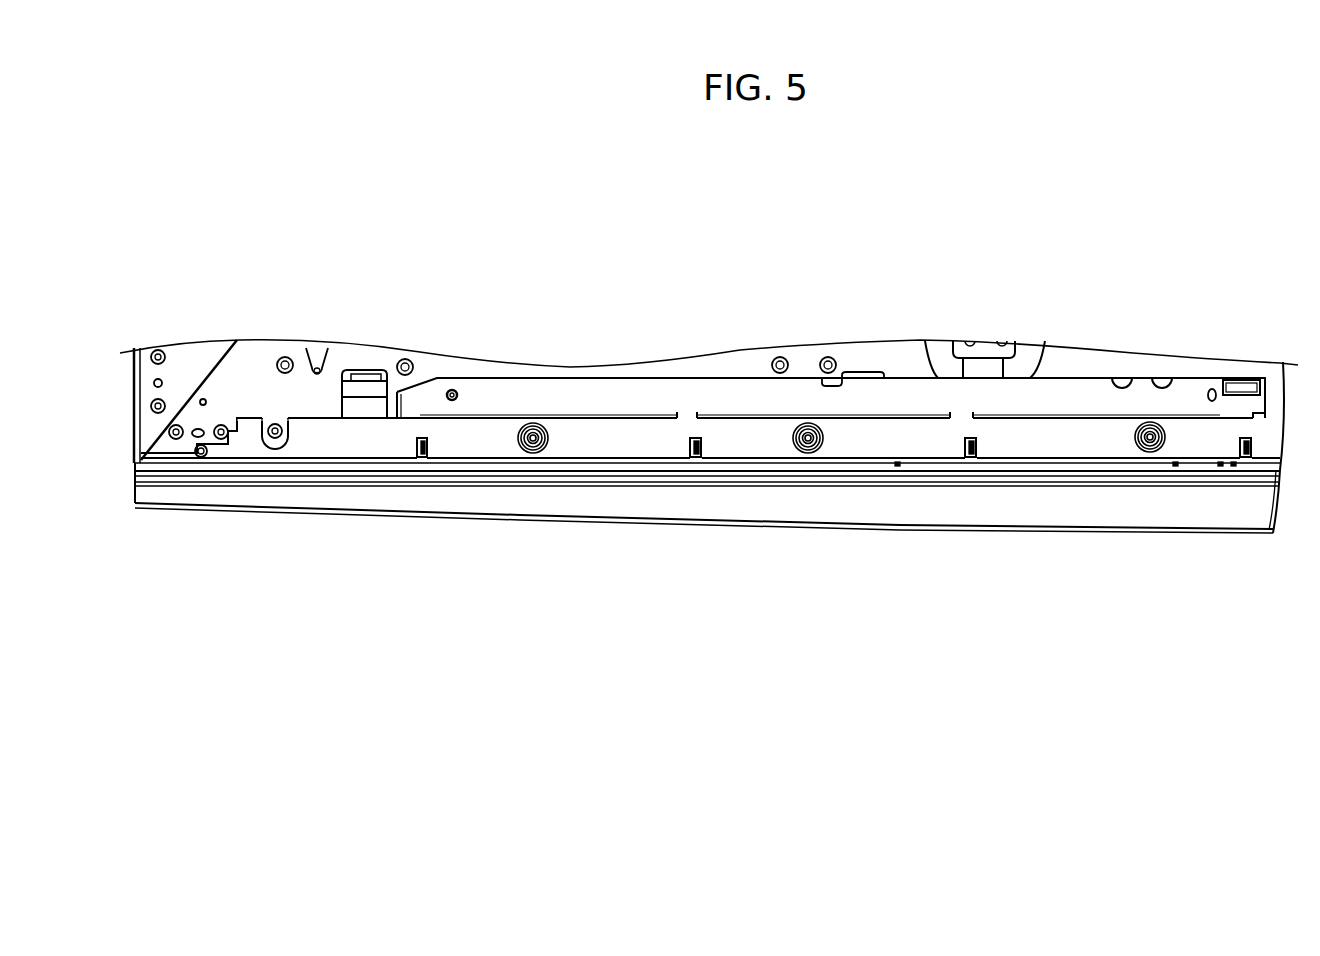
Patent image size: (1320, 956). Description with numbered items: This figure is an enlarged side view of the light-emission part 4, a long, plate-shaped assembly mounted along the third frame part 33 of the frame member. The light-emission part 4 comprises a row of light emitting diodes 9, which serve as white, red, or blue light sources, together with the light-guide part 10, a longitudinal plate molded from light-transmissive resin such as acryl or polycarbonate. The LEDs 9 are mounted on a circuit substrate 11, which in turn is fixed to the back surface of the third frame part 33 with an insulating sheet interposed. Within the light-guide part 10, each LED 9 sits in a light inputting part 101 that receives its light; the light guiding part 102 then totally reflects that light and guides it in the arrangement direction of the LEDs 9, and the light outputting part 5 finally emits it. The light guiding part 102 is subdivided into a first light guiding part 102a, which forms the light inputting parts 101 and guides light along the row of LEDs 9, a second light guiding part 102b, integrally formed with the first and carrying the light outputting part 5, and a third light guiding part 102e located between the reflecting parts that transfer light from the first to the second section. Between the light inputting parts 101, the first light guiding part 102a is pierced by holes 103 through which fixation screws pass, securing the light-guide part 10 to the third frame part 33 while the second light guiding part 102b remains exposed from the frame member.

The light-emission part 4 is at (165, 497).
The light outputting part 5 is at (233, 515).
The light emitting diode 9 is at (417, 460).
The light-guide part 10 is at (625, 448).
The circuit substrate 11 is at (527, 395).
The third frame part 33 is at (1172, 360).
The light inputting part 101 is at (427, 457).
The light guiding part 102 is at (1083, 463).
The first light guiding part 102a is at (590, 433).
The second light guiding part 102b is at (320, 493).
The third light guiding part 102e is at (785, 468).
The hole 103 is at (535, 447).